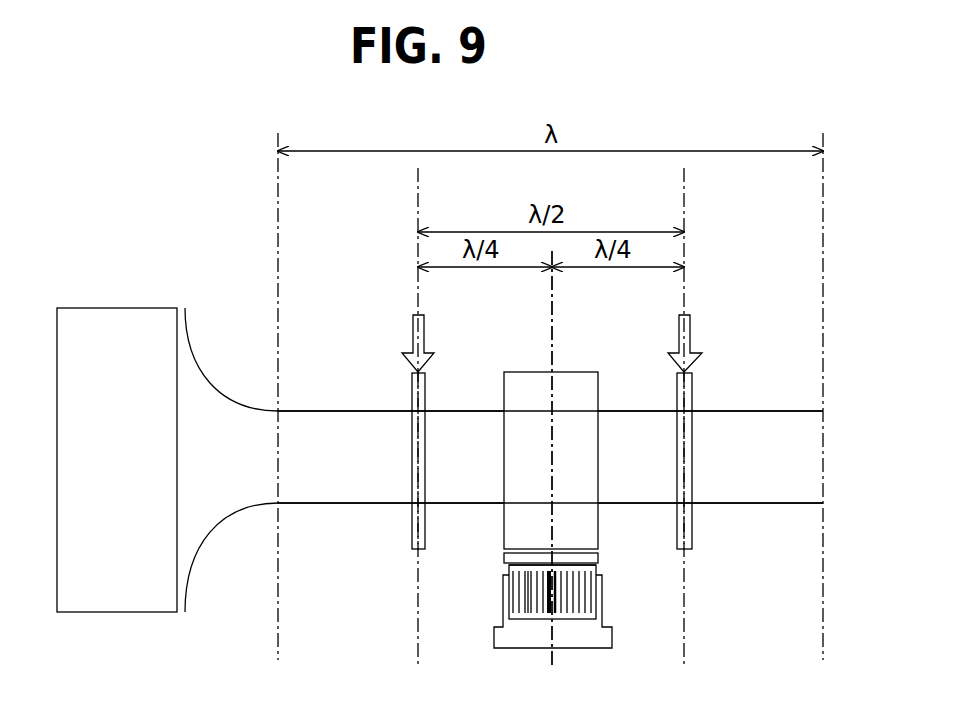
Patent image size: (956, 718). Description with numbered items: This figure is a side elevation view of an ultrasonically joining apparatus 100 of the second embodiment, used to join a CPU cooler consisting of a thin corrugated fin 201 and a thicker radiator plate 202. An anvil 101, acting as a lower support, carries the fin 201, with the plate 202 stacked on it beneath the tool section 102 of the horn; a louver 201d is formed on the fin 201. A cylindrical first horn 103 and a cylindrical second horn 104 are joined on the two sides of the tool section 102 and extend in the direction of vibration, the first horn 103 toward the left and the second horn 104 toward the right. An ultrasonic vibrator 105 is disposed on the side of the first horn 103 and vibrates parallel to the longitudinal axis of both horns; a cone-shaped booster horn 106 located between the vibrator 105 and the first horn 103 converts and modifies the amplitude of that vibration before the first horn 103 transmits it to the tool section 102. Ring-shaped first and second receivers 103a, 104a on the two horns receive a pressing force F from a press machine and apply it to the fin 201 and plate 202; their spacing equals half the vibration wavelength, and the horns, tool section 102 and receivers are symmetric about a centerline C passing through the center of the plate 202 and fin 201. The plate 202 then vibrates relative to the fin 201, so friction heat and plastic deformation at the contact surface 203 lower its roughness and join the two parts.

The joining apparatus 100 is at (218, 262).
The anvil 101 is at (612, 637).
The tool section 102 is at (590, 401).
The first horn 103 is at (340, 410).
The first receiver 103a is at (412, 378).
The second horn 104 is at (748, 438).
The second receiver 104a is at (693, 378).
The ultrasonic vibrator 105 is at (110, 318).
The booster horn 106 is at (212, 540).
The corrugated fin 201 is at (597, 602).
The louver 201d is at (528, 608).
The radiator plate 202 is at (600, 555).
The contact surface 203 is at (512, 570).
The centerline C is at (552, 532).